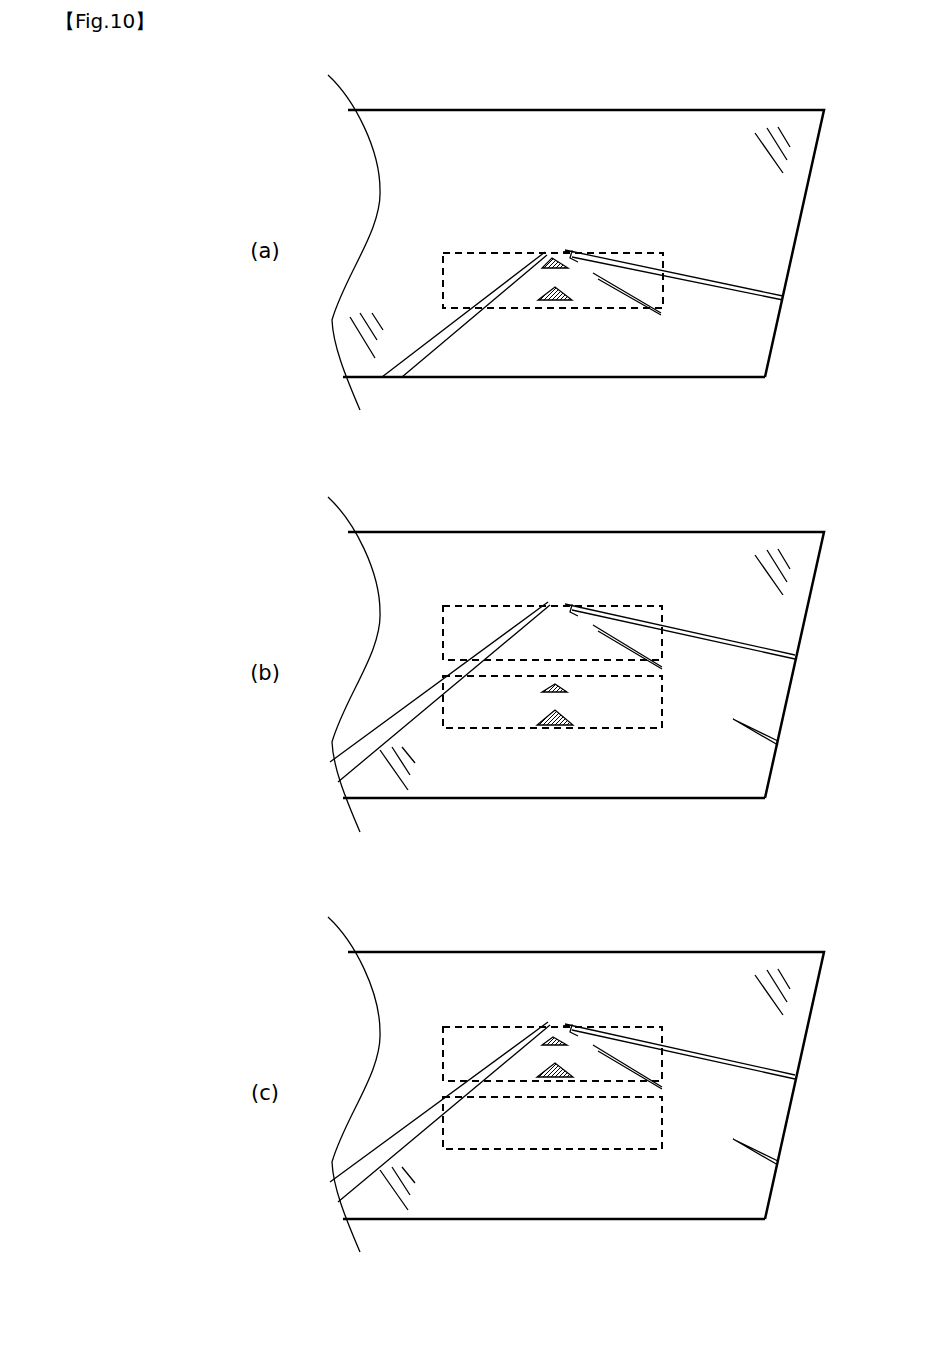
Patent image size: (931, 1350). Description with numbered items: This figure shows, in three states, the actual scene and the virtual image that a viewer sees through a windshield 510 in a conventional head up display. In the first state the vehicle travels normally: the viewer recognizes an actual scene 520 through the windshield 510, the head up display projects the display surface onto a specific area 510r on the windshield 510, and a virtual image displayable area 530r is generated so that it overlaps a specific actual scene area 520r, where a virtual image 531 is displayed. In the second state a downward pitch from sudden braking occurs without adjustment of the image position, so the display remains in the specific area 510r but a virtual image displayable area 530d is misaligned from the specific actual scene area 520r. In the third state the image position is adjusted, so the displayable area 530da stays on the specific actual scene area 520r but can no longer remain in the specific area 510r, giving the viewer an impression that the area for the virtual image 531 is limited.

The windshield 510 is at (615, 147).
The actual scene 520 is at (585, 340).
The virtual image 531 is at (545, 253).
The virtual image displayable area 530r is at (663, 256).
The specific area on the windshield 510r is at (662, 1148).
The specific actual scene area 520r is at (662, 607).
The virtual image displayable area 530d is at (662, 728).
The display object region shifted upward/adjusted 530da is at (662, 1027).